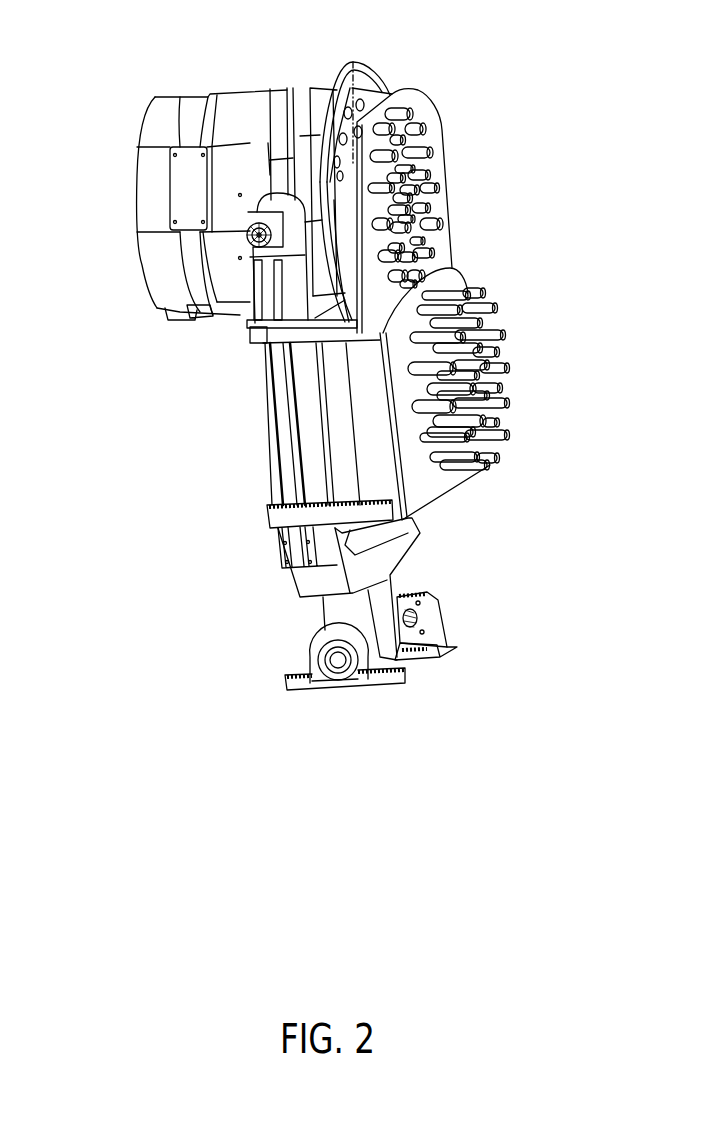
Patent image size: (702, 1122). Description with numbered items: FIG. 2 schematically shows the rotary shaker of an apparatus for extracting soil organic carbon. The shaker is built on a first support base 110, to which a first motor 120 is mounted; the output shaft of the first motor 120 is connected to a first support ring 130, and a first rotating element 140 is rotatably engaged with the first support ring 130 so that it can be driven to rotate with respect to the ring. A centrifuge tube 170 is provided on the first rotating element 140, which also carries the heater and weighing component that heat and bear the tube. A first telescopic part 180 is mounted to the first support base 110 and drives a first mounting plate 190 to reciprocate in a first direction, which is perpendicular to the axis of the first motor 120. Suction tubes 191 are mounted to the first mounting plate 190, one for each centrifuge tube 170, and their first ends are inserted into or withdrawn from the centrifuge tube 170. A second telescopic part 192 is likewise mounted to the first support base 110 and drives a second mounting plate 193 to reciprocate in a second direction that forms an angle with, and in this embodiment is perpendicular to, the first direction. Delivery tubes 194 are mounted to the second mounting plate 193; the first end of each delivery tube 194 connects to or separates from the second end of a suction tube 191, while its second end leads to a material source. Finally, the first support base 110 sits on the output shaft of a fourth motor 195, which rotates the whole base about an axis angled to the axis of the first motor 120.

The first support base 110 is at (302, 582).
The first motor 120 is at (252, 243).
The first support ring 130 is at (273, 162).
The first rotating element 140 is at (230, 108).
The centrifuge tube 170 is at (353, 62).
The first telescopic part 180 is at (272, 350).
The first mounting plate 190 is at (417, 98).
The suction tube 191 is at (433, 178).
The second telescopic part 192 is at (273, 502).
The second mounting plate 193 is at (427, 480).
The delivery tube 194 is at (496, 303).
The fourth motor 195 is at (347, 687).